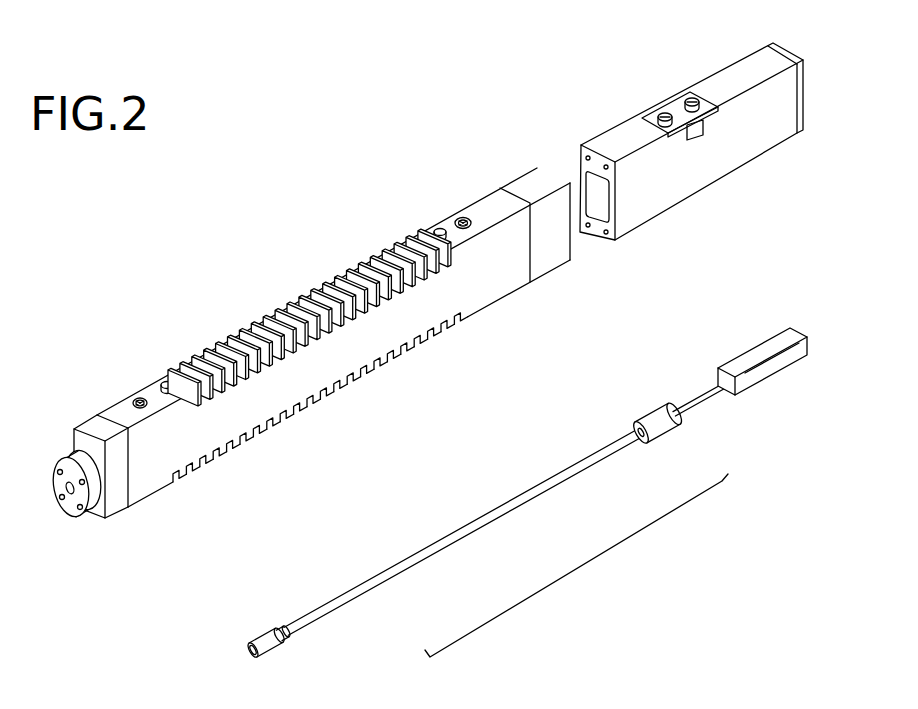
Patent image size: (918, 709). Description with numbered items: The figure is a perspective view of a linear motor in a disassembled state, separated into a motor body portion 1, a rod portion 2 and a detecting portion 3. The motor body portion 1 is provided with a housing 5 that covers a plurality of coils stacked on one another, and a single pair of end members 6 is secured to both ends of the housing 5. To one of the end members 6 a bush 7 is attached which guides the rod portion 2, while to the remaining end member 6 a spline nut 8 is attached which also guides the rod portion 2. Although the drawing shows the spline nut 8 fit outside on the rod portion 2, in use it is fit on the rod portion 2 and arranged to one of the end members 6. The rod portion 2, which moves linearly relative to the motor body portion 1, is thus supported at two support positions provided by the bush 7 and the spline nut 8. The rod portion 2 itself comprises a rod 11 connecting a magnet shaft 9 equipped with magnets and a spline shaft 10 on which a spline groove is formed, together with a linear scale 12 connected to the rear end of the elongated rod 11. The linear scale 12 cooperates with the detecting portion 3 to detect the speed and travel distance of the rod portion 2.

The motor body portion 1 is at (309, 378).
The rod portion 2 is at (526, 493).
The detecting portion 3 is at (668, 96).
The housing 5 is at (304, 394).
The end members 6 is at (115, 505).
The bush 7 is at (68, 519).
The spline nut 8 is at (654, 420).
The magnet shaft 9 is at (415, 565).
The spline shaft 10 is at (700, 402).
The rod 11 is at (582, 571).
The linear scale 12 is at (777, 343).